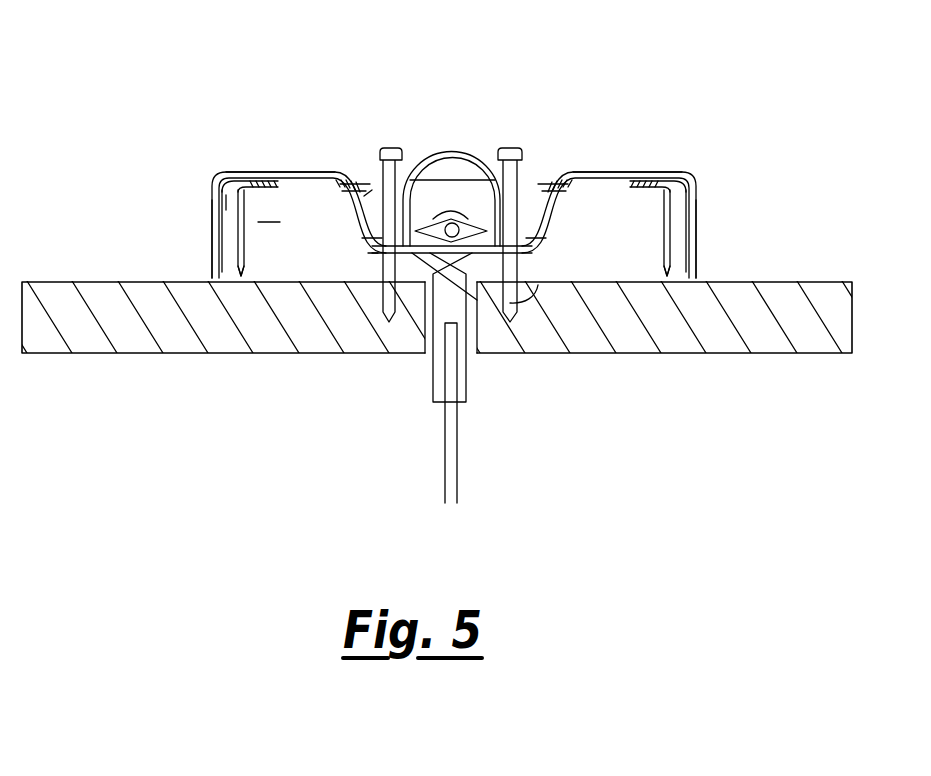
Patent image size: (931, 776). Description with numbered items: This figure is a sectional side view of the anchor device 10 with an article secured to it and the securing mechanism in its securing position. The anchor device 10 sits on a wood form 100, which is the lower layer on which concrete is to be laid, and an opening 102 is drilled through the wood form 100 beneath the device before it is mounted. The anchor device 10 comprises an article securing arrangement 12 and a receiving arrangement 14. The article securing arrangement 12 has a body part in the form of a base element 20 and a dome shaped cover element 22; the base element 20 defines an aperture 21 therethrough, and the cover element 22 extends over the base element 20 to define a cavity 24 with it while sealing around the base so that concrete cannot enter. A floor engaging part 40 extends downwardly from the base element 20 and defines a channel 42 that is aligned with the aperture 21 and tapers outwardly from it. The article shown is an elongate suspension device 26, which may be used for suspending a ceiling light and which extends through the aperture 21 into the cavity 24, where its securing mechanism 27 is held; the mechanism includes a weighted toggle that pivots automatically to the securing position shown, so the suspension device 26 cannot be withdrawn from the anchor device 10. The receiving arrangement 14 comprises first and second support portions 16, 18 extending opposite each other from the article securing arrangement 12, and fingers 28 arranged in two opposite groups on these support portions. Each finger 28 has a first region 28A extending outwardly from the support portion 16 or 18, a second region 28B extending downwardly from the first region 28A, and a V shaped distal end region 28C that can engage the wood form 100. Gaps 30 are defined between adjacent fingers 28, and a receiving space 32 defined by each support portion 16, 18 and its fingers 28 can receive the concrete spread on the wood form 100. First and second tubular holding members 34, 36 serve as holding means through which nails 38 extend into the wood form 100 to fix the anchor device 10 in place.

The anchor device 10 is at (304, 156).
The article securing arrangement 12 is at (472, 139).
The receiving arrangement 14 is at (623, 157).
The first support portion 16 is at (359, 172).
The second support portion 18 is at (555, 180).
The base element 20 is at (410, 256).
The aperture 21 is at (477, 300).
The cover element 22 is at (440, 162).
The cavity 24 is at (468, 188).
The elongate suspension device 26 is at (425, 439).
The securing mechanism 27 is at (438, 203).
The fingers 28 is at (192, 192).
The first region 28A is at (259, 172).
The second region 28B is at (207, 241).
The V shaped distal end region 28C is at (207, 269).
The gaps 30 is at (262, 222).
The receiving space 32 is at (226, 185).
The first tubular holding member 34 is at (368, 194).
The second tubular holding member 36 is at (522, 198).
The nails 38 is at (390, 148).
The floor engaging part 40 is at (345, 263).
The channel 42 is at (538, 285).
The wood form 100 is at (97, 354).
The opening 102 is at (465, 274).